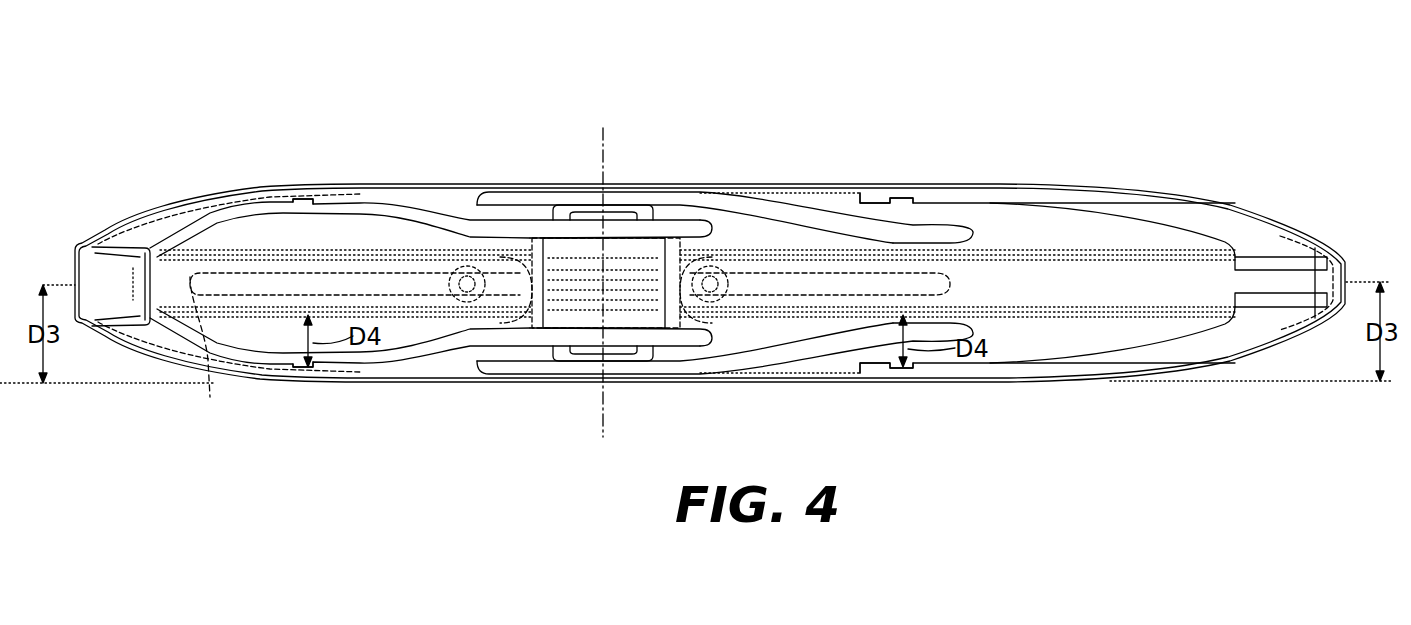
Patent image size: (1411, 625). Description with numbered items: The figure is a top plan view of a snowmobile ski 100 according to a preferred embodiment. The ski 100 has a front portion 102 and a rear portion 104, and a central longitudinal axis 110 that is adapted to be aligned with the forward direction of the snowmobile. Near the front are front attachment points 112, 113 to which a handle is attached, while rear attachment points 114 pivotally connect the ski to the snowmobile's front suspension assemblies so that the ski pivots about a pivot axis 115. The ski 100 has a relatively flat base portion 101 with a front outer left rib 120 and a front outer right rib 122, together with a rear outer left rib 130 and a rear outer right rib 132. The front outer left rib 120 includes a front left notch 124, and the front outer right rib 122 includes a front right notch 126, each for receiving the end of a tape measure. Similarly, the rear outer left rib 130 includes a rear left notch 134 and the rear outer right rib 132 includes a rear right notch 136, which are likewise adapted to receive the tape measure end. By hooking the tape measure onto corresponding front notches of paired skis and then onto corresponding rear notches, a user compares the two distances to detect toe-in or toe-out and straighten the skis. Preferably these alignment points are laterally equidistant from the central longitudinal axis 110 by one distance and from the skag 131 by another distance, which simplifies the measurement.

The snowmobile ski 100 is at (752, 150).
The base portion 101 is at (1060, 217).
The front portion 102 is at (1158, 168).
The rear portion 104 is at (325, 150).
The central longitudinal axis 110 is at (1363, 282).
The front attachment point 112 is at (908, 332).
The front attachment point 113 is at (1306, 257).
The rear attachment points 114 is at (608, 186).
The pivot axis 115 is at (603, 436).
The front outer left rib 120 is at (971, 186).
The front outer right rib 122 is at (953, 372).
The front left notch 124 is at (865, 208).
The front right notch 126 is at (880, 353).
The rear outer left rib 130 is at (388, 188).
The skag 131 is at (189, 354).
The rear outer right rib 132 is at (352, 378).
The rear left notch 134 is at (296, 216).
The rear right notch 136 is at (274, 370).